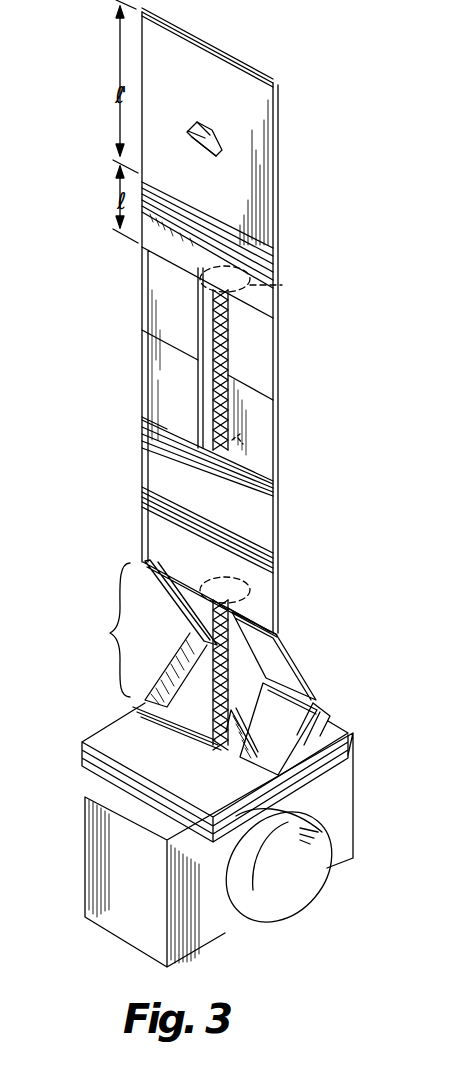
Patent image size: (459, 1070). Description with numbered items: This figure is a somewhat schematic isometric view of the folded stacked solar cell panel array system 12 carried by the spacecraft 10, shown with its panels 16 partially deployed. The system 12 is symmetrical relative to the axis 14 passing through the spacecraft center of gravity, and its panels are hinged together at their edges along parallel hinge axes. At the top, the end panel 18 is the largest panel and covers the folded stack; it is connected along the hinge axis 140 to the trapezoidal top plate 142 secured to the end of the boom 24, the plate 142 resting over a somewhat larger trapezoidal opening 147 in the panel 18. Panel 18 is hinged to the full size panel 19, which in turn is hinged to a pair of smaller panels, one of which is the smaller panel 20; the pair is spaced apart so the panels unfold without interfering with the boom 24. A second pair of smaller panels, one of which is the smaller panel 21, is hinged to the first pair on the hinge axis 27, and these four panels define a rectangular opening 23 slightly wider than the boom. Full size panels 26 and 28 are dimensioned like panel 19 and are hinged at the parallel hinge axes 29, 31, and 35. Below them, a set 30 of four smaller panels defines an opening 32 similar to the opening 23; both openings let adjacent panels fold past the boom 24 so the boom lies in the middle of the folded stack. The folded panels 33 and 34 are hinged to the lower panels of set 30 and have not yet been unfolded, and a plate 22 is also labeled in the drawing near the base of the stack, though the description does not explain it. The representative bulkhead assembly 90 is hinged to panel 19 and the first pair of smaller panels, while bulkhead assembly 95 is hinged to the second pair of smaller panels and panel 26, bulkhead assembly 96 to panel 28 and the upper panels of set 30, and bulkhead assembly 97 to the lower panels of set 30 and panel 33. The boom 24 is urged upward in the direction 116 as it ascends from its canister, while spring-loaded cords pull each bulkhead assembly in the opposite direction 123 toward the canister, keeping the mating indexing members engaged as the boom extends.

The spacecraft 10 is at (351, 801).
The folded stacked solar cell panel array system 12 is at (330, 470).
The axis 14 is at (208, 4).
The panels 16 is at (96, 153).
The end panel 18 is at (274, 136).
The full size panel 19 is at (274, 313).
The smaller panel 20 is at (273, 375).
The smaller panel 21 is at (273, 446).
The base plate 22 is at (316, 728).
The rectangular opening 23 is at (198, 309).
The boom 24 is at (203, 405).
The full size panel 26 is at (275, 533).
The hinge axis 27 is at (275, 404).
The full size panel 28 is at (275, 600).
The hinge axis 29 is at (278, 493).
The set of four smaller panels 30 is at (212, 678).
The hinge axis 31 is at (273, 563).
The opening 32 is at (248, 696).
The folded panel 33 is at (102, 734).
The folded panel 34 is at (230, 844).
The hinge axis 35 is at (277, 637).
The bulkhead assembly 90 is at (251, 280).
The bulkhead assembly 95 is at (211, 454).
The bulkhead assembly 96 is at (217, 578).
The bulkhead assembly 97 is at (206, 749).
The direction 116 is at (376, 48).
The direction 123 is at (378, 276).
The hinge axis 140 is at (302, 197).
The top plate 142 is at (206, 147).
The trapezoidal opening 147 is at (203, 128).